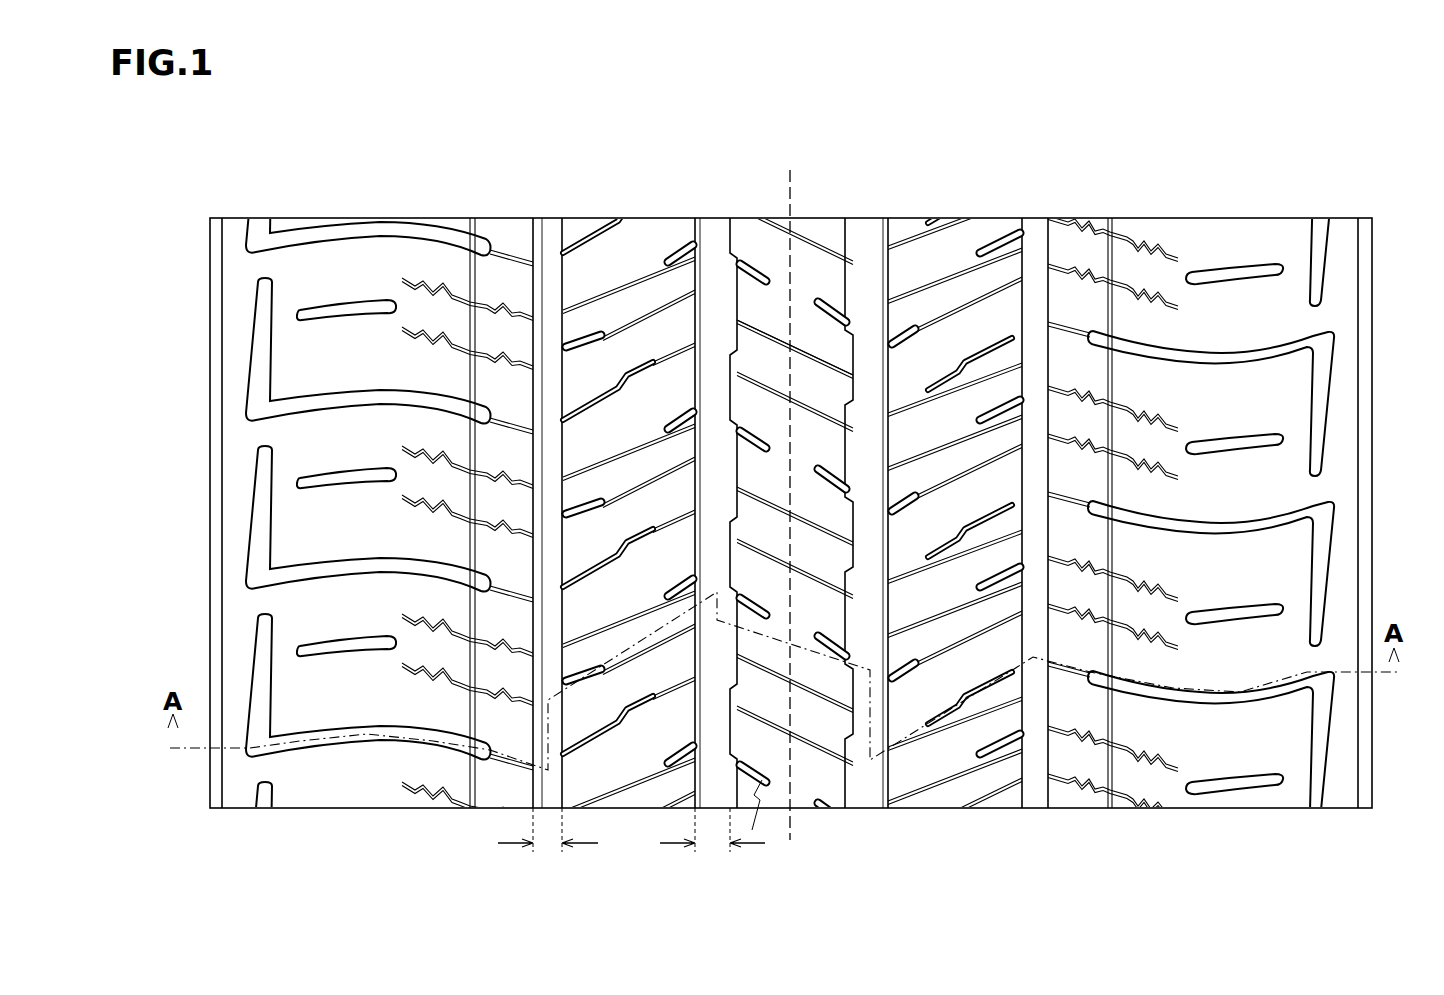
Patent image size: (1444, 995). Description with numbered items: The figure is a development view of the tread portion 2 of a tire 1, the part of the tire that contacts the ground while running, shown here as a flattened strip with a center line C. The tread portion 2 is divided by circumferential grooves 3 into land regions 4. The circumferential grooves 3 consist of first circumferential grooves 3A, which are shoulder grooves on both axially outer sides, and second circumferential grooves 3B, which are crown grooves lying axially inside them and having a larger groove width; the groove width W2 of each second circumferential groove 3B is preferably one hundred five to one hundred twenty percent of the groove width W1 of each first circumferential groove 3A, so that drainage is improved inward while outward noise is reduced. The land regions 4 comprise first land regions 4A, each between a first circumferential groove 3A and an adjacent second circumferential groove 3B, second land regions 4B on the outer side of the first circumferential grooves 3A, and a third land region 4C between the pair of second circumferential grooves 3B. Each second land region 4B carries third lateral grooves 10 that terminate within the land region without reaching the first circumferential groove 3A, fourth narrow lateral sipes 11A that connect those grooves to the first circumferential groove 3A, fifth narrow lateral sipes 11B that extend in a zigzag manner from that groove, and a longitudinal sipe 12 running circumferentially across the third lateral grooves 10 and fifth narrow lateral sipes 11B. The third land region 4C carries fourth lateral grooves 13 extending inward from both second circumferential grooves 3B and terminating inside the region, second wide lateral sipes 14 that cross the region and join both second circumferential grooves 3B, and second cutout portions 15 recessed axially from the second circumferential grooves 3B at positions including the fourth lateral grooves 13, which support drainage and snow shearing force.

The tire 1 is at (1374, 144).
The tread portion 2 is at (1086, 173).
The circumferential grooves 3 is at (995, 133).
The first circumferential grooves 3A is at (1030, 218).
The second circumferential grooves 3B is at (872, 228).
The land regions 4 is at (1050, 907).
The first land regions 4A is at (923, 887).
The second land regions 4B is at (738, 519).
The third land region 4C is at (1080, 515).
The third lateral grooves 10 is at (383, 228).
The fourth narrow lateral sipes 11A is at (492, 242).
The fifth narrow lateral sipes 11B is at (525, 292).
The longitudinal sipe 12 is at (470, 375).
The fourth lateral grooves 13 is at (820, 225).
The second wide lateral sipes 14 is at (783, 745).
The second cutout portions 15 is at (848, 453).
The tire equator C is at (790, 495).
The groove width of first circumferential groove W1 is at (548, 844).
The groove width of second circumferential groove W2 is at (712, 844).